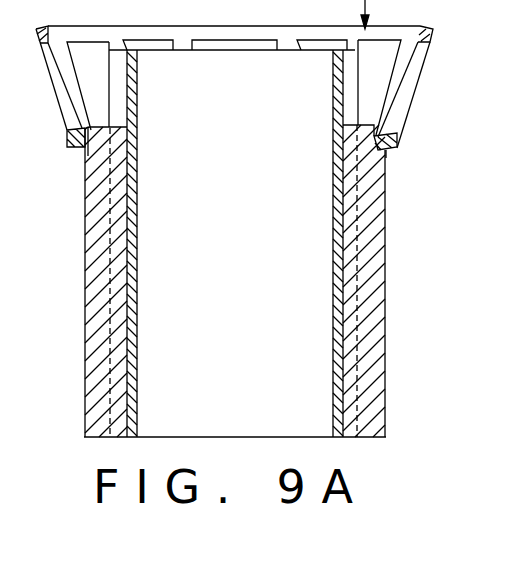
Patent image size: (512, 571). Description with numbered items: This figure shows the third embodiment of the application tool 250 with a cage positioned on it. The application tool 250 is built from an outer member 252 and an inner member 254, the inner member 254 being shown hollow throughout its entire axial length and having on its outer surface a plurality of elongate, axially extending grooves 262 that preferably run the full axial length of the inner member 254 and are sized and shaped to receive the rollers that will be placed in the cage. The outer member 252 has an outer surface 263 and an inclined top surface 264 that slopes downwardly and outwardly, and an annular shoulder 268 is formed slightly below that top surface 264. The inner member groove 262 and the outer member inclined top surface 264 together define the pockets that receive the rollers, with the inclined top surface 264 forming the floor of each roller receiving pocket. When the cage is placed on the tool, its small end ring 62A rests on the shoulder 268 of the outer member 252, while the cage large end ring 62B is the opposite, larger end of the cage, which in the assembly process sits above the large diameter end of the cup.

The application tool 250 is at (406, 234).
The outer member 252 is at (75, 315).
The inner member 254 is at (150, 258).
The grooves 262 is at (117, 82).
The inclined top surface 264 is at (98, 127).
The annular shoulder 268 is at (84, 170).
The outer surface 263 is at (0, 259).
The small end ring 62A is at (389, 150).
The large end ring 62B is at (421, 27).